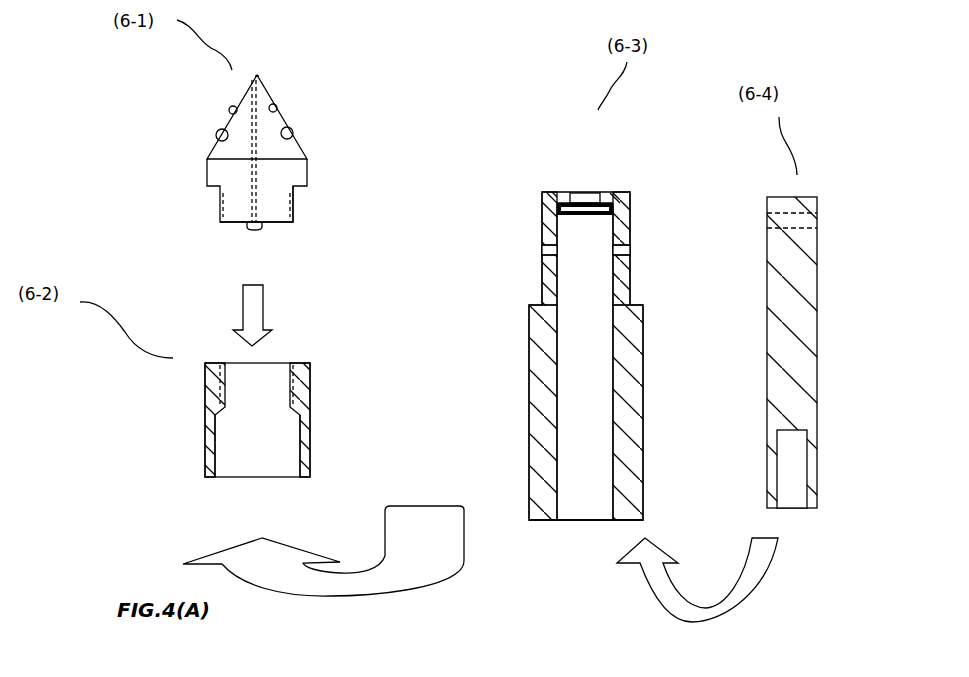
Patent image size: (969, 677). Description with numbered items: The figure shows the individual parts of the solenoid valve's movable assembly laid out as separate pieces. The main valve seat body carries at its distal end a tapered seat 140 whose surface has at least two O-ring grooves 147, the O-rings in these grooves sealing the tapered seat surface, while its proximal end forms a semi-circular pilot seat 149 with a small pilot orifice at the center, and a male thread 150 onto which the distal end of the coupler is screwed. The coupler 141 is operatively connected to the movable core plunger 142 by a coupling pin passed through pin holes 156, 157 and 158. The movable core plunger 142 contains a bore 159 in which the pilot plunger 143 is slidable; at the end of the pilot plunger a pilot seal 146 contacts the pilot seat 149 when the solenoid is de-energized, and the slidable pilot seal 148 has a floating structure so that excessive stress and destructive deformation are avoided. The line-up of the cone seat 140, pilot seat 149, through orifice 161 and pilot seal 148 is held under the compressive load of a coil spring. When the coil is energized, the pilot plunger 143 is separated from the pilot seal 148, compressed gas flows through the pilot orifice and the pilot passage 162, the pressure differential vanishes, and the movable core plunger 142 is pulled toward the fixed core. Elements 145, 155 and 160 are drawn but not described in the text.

The tapered seat 140 is at (218, 119).
The nozzle holder 141 is at (193, 415).
The movable core plunger 142 is at (592, 177).
The pilot plunger 143 is at (807, 530).
The tube bottom opening 145 is at (617, 521).
The pilot seal 146 is at (807, 450).
The O-ring grooves 147 is at (300, 131).
The pilot seal 148 is at (620, 207).
The pilot seat 149 is at (257, 236).
The male thread 150 is at (302, 207).
The holder inner groove 155 is at (300, 383).
The pin hole 156 is at (535, 255).
The pin hole 157 is at (197, 452).
The pin hole 158 is at (823, 225).
The bore 159 is at (602, 503).
The sealing member 160 is at (557, 205).
The through orifice 161 is at (567, 187).
The pilot passage 162 is at (262, 77).